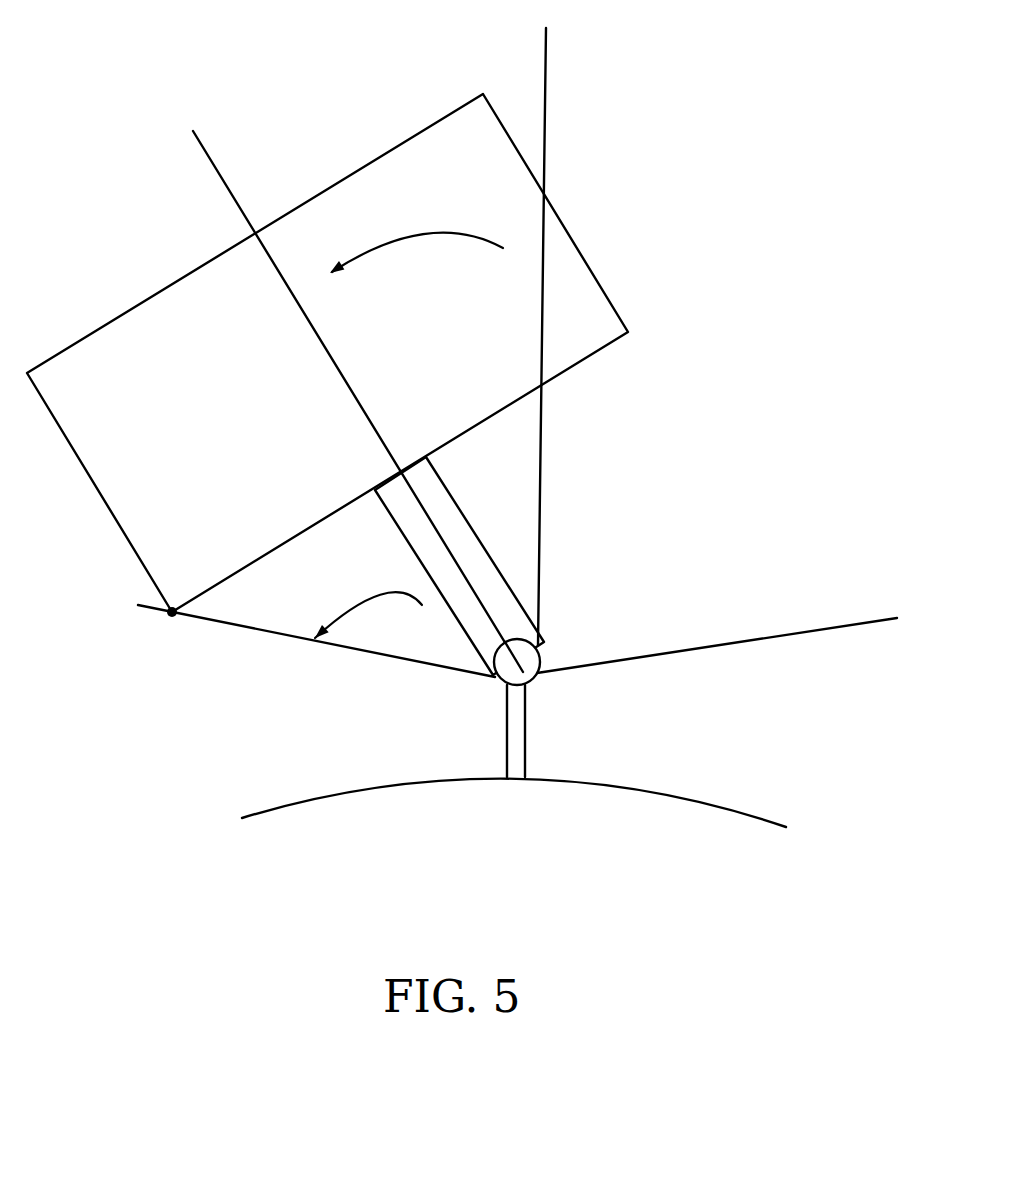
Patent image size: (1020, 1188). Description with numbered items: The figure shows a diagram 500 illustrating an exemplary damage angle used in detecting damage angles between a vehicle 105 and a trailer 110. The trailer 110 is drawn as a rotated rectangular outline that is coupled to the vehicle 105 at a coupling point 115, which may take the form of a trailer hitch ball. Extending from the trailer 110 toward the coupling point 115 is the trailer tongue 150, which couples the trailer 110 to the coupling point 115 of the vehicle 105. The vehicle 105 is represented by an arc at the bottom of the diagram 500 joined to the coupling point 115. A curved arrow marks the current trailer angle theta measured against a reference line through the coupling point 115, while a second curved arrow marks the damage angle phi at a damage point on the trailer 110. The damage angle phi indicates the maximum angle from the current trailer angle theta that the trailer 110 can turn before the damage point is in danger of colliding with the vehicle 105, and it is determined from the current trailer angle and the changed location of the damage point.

The diagram 500 is at (132, 90).
The trailer 110 is at (558, 213).
The trailer tongue 150 is at (450, 497).
The coupling point 115 is at (540, 660).
The vehicle 105 is at (700, 792).